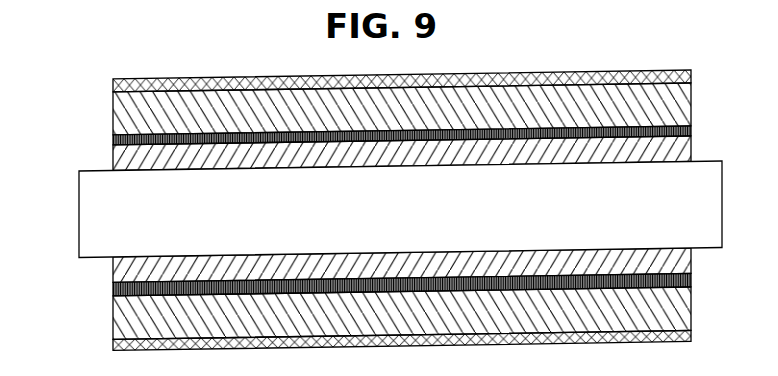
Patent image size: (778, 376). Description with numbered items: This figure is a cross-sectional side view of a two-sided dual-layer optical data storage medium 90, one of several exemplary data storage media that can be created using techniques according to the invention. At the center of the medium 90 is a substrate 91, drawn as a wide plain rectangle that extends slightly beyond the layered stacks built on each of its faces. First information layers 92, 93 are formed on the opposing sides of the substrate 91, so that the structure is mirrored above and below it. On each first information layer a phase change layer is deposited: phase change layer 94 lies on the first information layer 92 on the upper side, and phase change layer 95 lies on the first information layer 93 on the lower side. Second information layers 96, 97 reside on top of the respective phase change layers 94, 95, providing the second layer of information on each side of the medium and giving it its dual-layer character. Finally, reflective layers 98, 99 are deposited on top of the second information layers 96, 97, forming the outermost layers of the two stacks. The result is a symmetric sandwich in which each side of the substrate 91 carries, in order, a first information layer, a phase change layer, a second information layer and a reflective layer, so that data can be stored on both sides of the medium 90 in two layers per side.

The two-sided dual-layer optical data storage medium 90 is at (405, 188).
The substrate 91 is at (722, 204).
The first information layer 92 is at (692, 153).
The first information layer 93 is at (693, 258).
The phase change layer 94 is at (110, 137).
The phase change layer 95 is at (113, 284).
The second information layer 96 is at (692, 104).
The second information layer 97 is at (693, 302).
The reflective layer 98 is at (110, 83).
The reflective layer 99 is at (113, 340).